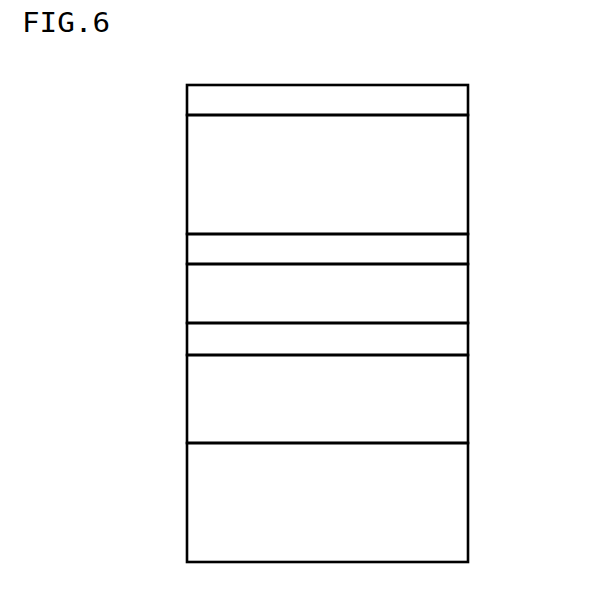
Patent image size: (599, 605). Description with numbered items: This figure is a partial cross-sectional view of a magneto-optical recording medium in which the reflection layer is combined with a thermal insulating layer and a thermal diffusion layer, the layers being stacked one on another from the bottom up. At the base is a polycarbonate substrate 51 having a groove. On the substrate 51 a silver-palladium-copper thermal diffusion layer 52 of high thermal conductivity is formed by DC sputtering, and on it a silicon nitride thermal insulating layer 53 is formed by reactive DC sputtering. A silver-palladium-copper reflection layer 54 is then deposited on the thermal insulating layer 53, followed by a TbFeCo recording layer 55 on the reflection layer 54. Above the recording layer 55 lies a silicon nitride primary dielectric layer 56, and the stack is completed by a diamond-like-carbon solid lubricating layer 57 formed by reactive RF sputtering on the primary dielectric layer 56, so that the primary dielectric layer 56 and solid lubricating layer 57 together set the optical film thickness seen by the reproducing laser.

The substrate 51 is at (468, 488).
The thermal diffusion layer 52 is at (468, 400).
The thermal insulating layer 53 is at (468, 339).
The reflection layer 54 is at (468, 281).
The recording layer 55 is at (468, 251).
The primary dielectric layer 56 is at (468, 161).
The solid lubricating layer 57 is at (468, 101).